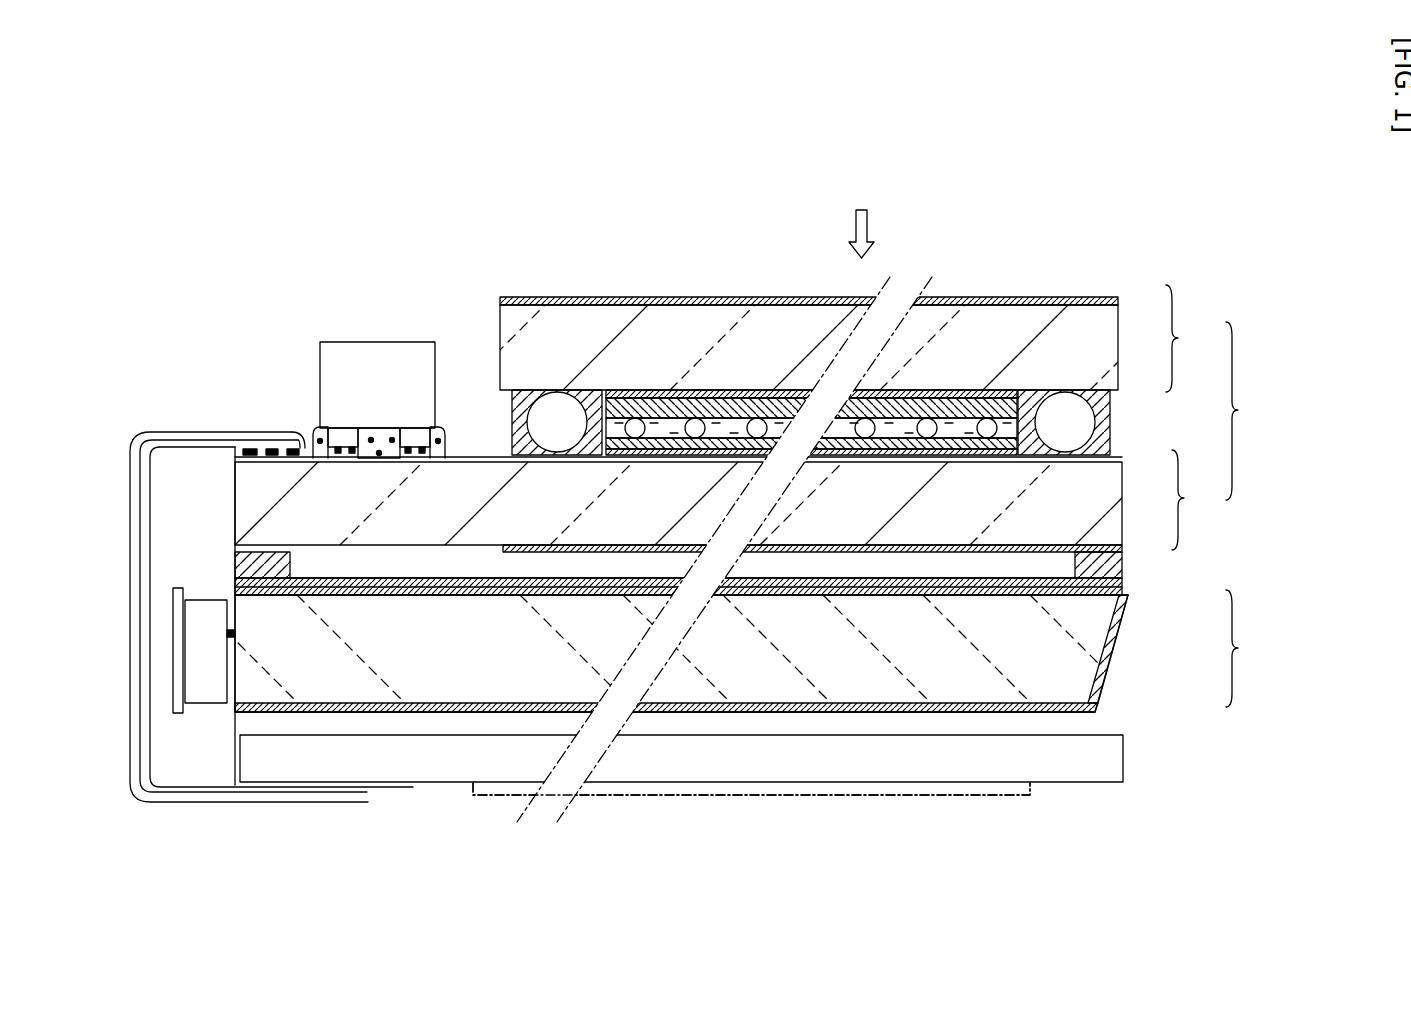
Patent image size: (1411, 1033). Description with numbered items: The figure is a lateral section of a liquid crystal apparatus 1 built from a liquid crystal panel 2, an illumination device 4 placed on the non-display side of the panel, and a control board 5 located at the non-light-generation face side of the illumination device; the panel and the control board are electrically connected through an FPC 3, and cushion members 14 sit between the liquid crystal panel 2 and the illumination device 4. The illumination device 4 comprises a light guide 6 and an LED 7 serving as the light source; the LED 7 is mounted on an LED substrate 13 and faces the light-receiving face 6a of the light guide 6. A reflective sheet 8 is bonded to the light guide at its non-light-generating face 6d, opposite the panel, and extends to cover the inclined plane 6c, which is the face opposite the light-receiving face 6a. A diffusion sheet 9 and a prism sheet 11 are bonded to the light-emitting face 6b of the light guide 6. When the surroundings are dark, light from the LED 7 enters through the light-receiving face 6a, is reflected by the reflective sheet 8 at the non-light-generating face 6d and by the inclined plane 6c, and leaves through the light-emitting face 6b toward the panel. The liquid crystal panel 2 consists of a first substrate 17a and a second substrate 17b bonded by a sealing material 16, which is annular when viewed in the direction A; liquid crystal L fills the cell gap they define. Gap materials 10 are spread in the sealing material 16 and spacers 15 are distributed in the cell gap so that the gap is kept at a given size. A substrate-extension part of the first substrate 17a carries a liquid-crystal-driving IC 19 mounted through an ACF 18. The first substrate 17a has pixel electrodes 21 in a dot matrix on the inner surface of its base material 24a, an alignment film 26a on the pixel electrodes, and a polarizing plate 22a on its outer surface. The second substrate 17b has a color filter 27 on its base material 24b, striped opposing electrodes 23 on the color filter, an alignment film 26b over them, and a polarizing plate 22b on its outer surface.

The liquid crystal apparatus 1 is at (208, 315).
The liquid crystal panel 2 is at (750, 444).
The FPC 3 is at (154, 422).
The illumination device 4 is at (704, 649).
The control board 5 is at (1118, 761).
The light guide 6 is at (689, 649).
The light-receiving face 6a is at (233, 630).
The light-emitting face 6b is at (772, 589).
The inclined plane 6c is at (1112, 677).
The non-light-generating face 6d is at (808, 713).
The LED 7 is at (207, 691).
The reflective sheet 8 is at (717, 713).
The diffusion sheet 9 is at (566, 597).
The gap materials 10 is at (548, 396).
The prism sheet 11 is at (380, 580).
The LED substrate 13 is at (178, 587).
The cushion members 14 is at (284, 543).
The spacers 15 is at (633, 456).
The sealing material 16 is at (512, 409).
The first substrate 17a is at (733, 546).
The second substrate 17b is at (845, 319).
The ACF 18 is at (310, 447).
The liquid-crystal-driving IC 19 is at (370, 351).
The pixel electrodes 21 is at (622, 458).
The polarizing plate 22a is at (920, 553).
The polarizing plate 22b is at (623, 297).
The opposing electrodes 23 is at (650, 393).
The base material 24a is at (1103, 522).
The base material 24b is at (1100, 332).
The alignment film 26a is at (735, 450).
The alignment film 26b is at (783, 398).
The color filter 27 is at (915, 398).
The liquid crystal L is at (960, 423).
The direction A is at (871, 234).